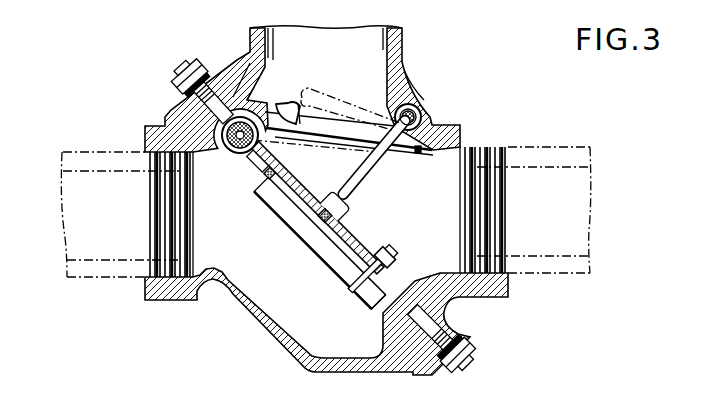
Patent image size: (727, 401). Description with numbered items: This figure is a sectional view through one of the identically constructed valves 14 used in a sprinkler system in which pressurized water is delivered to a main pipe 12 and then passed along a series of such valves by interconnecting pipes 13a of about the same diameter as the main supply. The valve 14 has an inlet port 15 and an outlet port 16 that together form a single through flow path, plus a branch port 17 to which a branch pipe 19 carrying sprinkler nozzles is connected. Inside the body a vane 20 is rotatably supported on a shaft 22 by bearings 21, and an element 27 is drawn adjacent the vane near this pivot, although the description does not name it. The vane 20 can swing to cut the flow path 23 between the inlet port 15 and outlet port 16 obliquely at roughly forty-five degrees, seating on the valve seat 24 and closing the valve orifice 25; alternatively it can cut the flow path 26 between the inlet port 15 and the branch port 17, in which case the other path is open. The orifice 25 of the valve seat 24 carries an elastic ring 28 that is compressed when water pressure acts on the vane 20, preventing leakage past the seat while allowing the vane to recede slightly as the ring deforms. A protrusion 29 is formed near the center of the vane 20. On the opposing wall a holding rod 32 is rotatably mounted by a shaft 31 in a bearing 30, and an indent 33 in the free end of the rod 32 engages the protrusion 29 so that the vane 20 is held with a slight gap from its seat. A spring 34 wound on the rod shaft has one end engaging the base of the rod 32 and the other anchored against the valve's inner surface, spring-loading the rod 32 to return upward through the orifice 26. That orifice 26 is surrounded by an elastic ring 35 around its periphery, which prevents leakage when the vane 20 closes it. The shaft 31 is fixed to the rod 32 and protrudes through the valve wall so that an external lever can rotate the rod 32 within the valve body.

The main pipe 12 is at (549, 262).
The interconnecting pipe 13a is at (90, 268).
The valve 14 is at (237, 329).
The inlet port 15 is at (433, 270).
The outlet port 16 is at (213, 267).
The branch port 17 is at (373, 66).
The branch pipe 19 is at (252, 40).
The vane 20 is at (371, 266).
The bearing 21 is at (238, 90).
The shaft 22 is at (233, 151).
The flow path 23 is at (262, 237).
The valve seat 24 is at (374, 292).
The valve orifice 25 is at (300, 222).
The flow path 26 is at (296, 112).
The arm hub 27 is at (247, 170).
The elastic ring 28 is at (358, 280).
The protrusion 29 is at (341, 206).
The bearing 30 is at (425, 97).
The shaft 31 is at (421, 117).
The holding rod 32 is at (360, 170).
The indent 33 is at (335, 190).
The spring 34 is at (413, 82).
The elastic ring 35 is at (418, 153).